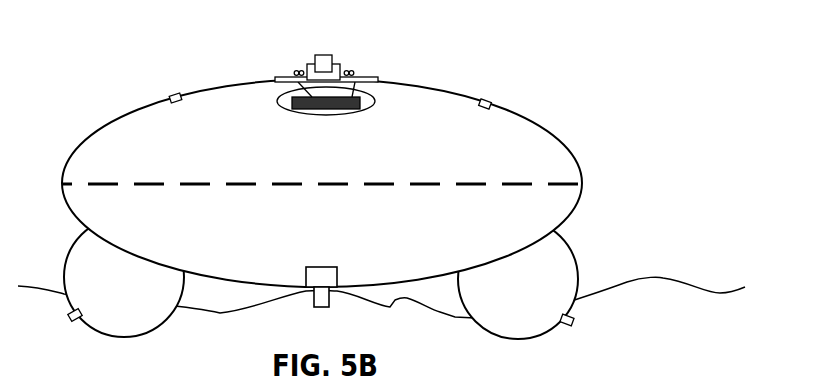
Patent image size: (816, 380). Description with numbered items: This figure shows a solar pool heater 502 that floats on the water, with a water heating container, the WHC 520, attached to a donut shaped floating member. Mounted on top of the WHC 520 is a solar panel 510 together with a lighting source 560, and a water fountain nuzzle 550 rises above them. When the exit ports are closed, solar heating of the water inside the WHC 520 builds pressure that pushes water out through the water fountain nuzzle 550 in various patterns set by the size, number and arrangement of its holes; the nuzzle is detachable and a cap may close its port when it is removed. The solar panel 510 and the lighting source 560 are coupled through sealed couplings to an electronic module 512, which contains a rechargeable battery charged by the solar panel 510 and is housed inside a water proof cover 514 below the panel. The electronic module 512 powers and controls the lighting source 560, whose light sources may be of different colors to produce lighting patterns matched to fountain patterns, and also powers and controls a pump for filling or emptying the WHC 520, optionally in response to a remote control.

The solar pool heater 502 is at (612, 56).
The solar panel 510 is at (265, 88).
The electronic module 512 is at (332, 120).
The water proof cover 514 is at (378, 117).
The WHC 520 is at (432, 83).
The water fountain nuzzle 550 is at (350, 56).
The lighting source 560 is at (286, 65).